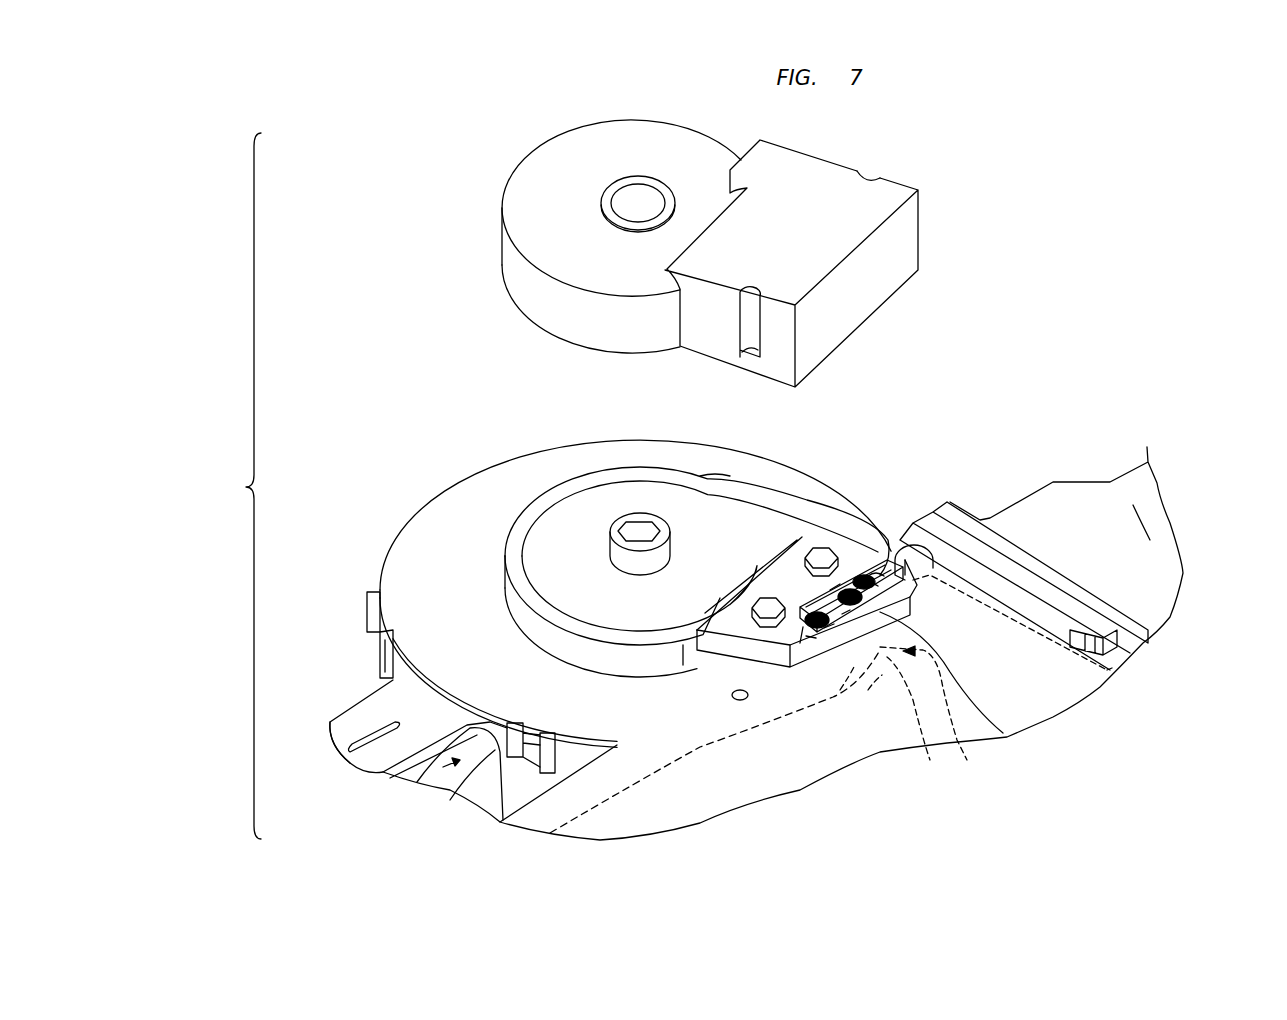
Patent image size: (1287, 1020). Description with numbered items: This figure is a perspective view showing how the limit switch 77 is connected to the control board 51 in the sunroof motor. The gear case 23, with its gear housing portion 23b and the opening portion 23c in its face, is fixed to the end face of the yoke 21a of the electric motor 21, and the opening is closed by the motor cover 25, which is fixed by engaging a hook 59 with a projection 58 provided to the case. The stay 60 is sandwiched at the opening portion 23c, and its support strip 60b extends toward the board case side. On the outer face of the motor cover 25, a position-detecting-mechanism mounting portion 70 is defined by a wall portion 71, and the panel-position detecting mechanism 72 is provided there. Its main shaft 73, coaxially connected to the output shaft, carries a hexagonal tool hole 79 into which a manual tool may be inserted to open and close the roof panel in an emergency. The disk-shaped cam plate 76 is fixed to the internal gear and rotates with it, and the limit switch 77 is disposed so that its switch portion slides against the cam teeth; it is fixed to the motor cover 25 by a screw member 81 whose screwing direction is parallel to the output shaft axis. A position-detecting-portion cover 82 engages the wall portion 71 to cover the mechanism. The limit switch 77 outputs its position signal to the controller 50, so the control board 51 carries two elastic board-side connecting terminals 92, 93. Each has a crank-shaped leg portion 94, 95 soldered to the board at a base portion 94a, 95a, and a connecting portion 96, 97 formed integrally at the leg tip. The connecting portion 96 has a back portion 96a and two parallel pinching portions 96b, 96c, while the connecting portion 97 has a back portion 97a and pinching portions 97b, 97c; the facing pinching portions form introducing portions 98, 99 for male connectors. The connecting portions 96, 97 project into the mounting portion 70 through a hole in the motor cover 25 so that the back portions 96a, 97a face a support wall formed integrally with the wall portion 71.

The electric motor 21 is at (1105, 497).
The yoke 21a is at (1133, 505).
The gear case 23 is at (455, 765).
The gear housing portion 23b is at (490, 792).
The opening portion 23c is at (470, 797).
The motor cover 25 is at (490, 482).
The controller 50 is at (1000, 610).
The control board 51 is at (963, 607).
The projection 58 is at (515, 760).
The hook 59 is at (547, 775).
The stay 60 is at (350, 700).
The support strip 60b is at (335, 738).
The position-detecting-mechanism mounting portion 70 is at (525, 620).
The wall portion 71 is at (520, 602).
The panel-position detecting mechanism 72 is at (495, 545).
The main shaft 73 is at (653, 517).
The cam plate 76 is at (708, 502).
The limit switch 77 is at (700, 665).
The tool hole 79 is at (637, 525).
The screw member 81 is at (768, 596).
The position-detecting-portion cover 82 is at (888, 190).
The board-side connecting terminal 92 is at (800, 643).
The board-side connecting terminal 93 is at (920, 540).
The leg portion 94 is at (860, 690).
The base portion 94a is at (868, 690).
The leg portion 95 is at (965, 756).
The base portion 95a is at (930, 760).
The connecting portion 96 is at (823, 623).
The back portion 96a is at (847, 597).
The pinching portion 96b is at (833, 607).
The pinching portion 96c is at (807, 630).
The connecting portion 97 is at (850, 578).
The back portion 97a is at (1005, 735).
The pinching portion 97b is at (880, 572).
The pinching portion 97c is at (870, 583).
The introducing portion 98 is at (835, 585).
The introducing portion 99 is at (852, 592).